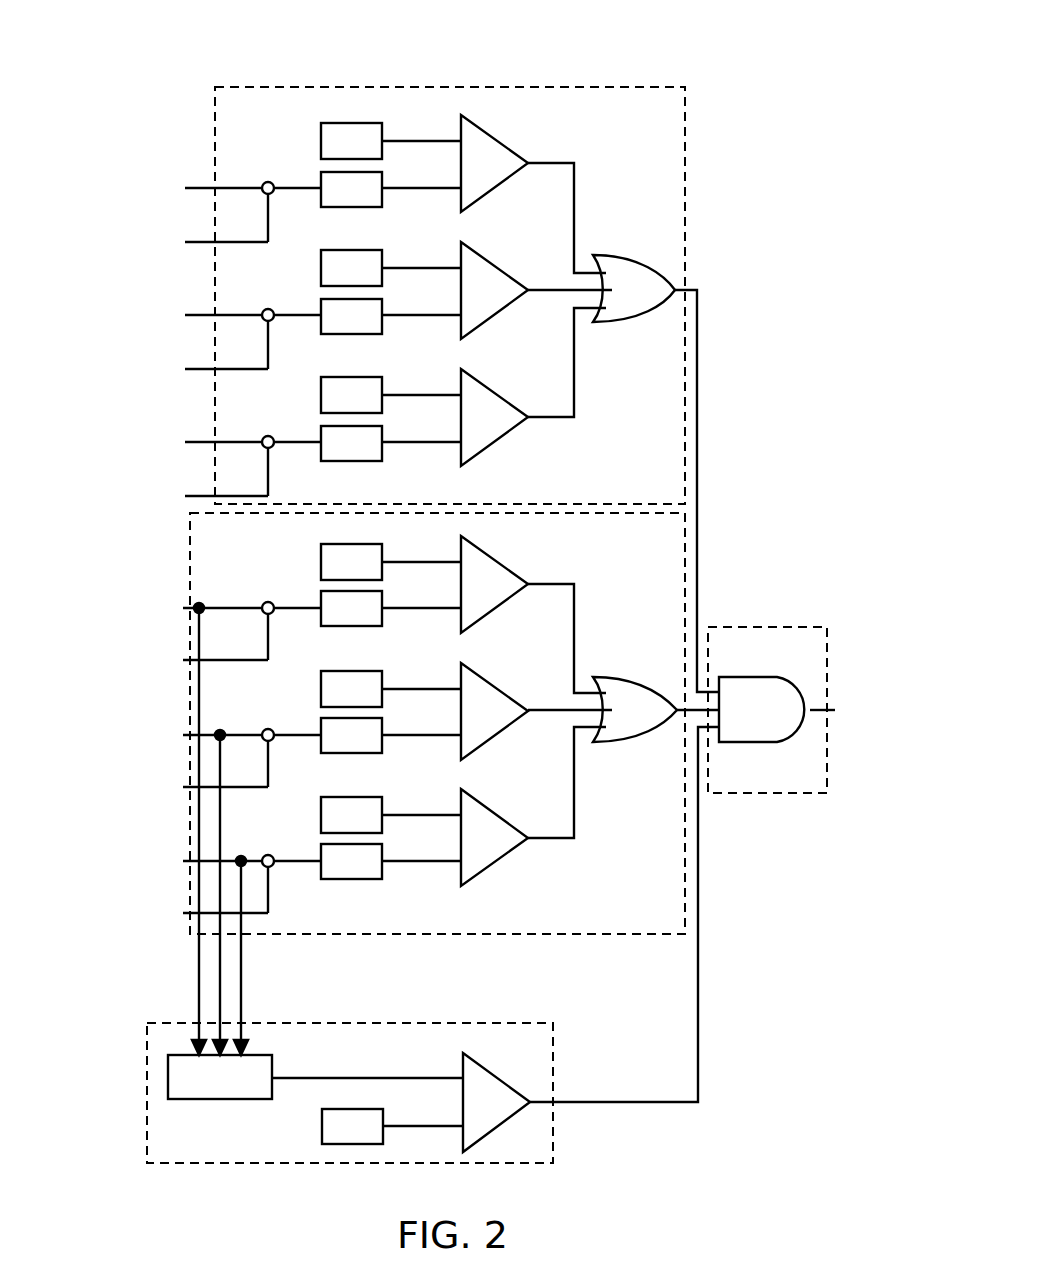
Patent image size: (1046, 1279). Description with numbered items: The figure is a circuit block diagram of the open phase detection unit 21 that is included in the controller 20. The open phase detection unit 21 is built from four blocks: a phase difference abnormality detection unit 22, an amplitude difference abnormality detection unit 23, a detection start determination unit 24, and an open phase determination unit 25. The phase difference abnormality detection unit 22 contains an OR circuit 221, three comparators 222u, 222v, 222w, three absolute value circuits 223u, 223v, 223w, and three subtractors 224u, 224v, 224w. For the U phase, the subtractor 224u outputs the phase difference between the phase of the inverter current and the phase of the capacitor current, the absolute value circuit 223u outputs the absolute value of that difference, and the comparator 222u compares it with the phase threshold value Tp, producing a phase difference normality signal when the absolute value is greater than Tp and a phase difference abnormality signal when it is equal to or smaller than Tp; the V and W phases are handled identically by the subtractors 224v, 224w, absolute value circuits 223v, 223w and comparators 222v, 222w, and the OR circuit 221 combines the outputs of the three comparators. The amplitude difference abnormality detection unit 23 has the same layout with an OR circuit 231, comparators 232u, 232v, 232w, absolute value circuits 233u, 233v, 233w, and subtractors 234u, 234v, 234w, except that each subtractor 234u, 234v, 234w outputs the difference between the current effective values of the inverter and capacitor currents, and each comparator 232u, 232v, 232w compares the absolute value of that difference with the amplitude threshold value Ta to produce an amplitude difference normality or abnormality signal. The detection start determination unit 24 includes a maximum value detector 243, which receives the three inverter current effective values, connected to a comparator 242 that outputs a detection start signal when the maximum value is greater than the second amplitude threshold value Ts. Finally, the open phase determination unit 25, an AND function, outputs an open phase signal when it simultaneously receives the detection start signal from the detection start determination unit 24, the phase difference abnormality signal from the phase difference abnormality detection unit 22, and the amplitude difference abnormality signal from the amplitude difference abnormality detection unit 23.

The controller 20 is at (810, 52).
The open phase detection unit 21 is at (690, 58).
The phase difference abnormality detection unit 22 is at (685, 147).
The OR circuit 221 is at (636, 322).
The comparator 222u is at (503, 142).
The comparator 222v is at (498, 268).
The comparator 222w is at (498, 395).
The absolute value circuit 223u is at (348, 207).
The absolute value circuit 223v is at (348, 334).
The absolute value circuit 223w is at (348, 461).
The subtractor 224u is at (268, 182).
The subtractor 224v is at (268, 309).
The subtractor 224w is at (268, 436).
The amplitude difference abnormality detection unit 23 is at (686, 872).
The OR circuit 231 is at (636, 742).
The comparator 232u is at (503, 563).
The comparator 232v is at (498, 689).
The comparator 232w is at (498, 815).
The absolute value circuit 233u is at (348, 626).
The absolute value circuit 233v is at (348, 753).
The absolute value circuit 233w is at (348, 879).
The subtractor 234u is at (268, 602).
The subtractor 234v is at (268, 729).
The subtractor 234w is at (268, 855).
The detection start determination unit 24 is at (553, 1140).
The comparator 242 is at (500, 1075).
The maximum value detector 243 is at (225, 1099).
The open phase determination unit 25 is at (827, 640).